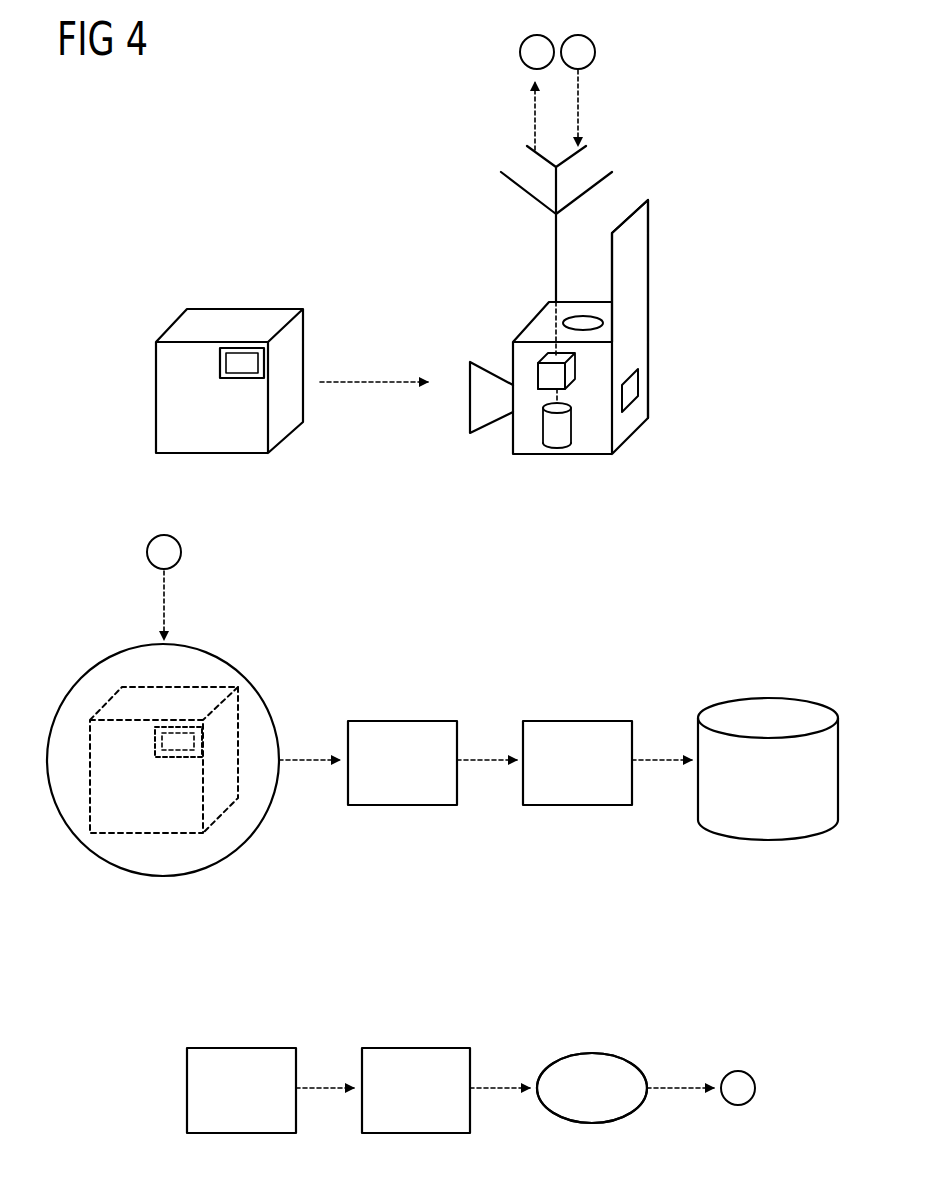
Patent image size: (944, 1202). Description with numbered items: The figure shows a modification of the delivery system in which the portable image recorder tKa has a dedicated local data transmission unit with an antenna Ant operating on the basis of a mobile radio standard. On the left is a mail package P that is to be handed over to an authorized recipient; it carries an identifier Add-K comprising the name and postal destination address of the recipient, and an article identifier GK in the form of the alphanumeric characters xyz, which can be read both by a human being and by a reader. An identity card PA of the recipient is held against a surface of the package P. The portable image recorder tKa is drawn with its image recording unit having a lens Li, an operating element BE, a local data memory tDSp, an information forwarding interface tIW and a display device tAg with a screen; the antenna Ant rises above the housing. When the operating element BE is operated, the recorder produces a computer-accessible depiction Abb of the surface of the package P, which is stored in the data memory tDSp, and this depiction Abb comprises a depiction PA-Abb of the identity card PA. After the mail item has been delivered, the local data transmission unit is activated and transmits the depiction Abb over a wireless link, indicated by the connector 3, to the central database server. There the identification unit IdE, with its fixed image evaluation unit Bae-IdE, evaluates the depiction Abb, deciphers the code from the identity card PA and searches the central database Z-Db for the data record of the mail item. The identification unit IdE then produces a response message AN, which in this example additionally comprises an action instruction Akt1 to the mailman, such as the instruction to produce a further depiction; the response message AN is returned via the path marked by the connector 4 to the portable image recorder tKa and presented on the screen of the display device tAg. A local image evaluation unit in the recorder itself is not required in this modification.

The mail package P is at (233, 326).
The identity card PA is at (250, 363).
The identifier for destination address Add-K is at (178, 395).
The article identifier xyz is at (245, 431).
The article identifier GK is at (222, 437).
The response message AN is at (655, 310).
The antenna Ant is at (556, 181).
The display device tAg is at (634, 247).
The operating element BE is at (584, 318).
The portable image recorder tKa is at (545, 322).
The data memory tDSp is at (556, 432).
The lens Li is at (495, 420).
The information forwarding interface tIW is at (630, 390).
The computer-accessible depiction Abb is at (270, 700).
The depiction of the identity card PA-Abb is at (175, 740).
The fixed image evaluation unit Bae-IdE is at (400, 720).
The identification unit IdE is at (579, 720).
The central database Z-Db is at (766, 710).
The action instruction Akt1 is at (592, 1088).
The connector 3 is at (350, 337).
The connector 4 is at (658, 570).